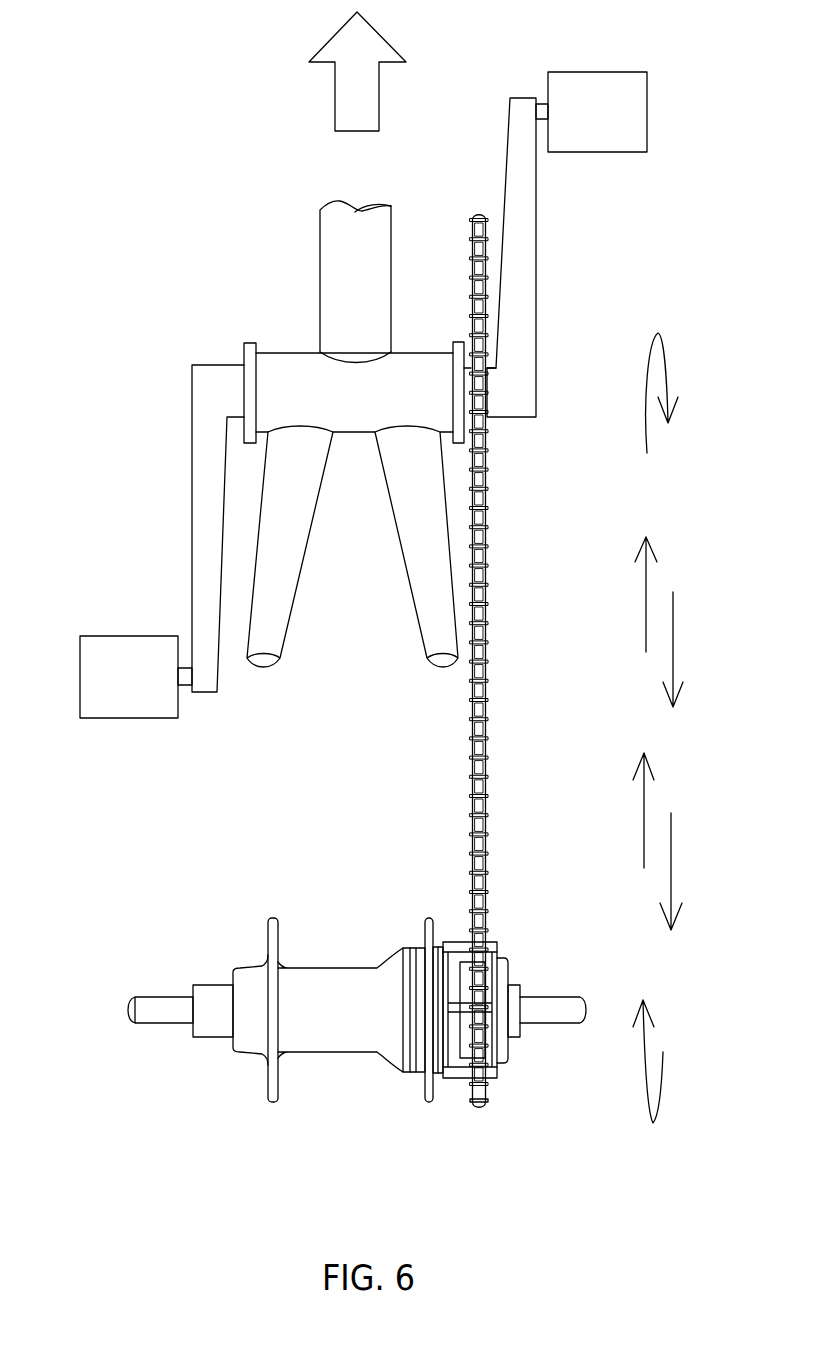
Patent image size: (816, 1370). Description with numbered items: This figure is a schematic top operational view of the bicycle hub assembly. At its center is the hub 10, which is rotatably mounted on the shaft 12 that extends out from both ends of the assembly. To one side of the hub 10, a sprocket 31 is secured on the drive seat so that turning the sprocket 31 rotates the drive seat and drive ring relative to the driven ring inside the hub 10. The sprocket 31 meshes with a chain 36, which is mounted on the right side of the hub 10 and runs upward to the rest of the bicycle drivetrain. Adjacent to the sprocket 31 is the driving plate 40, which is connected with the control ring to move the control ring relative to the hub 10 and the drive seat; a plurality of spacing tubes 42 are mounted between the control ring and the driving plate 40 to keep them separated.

The hub 10 is at (337, 1055).
The shaft 12 is at (142, 1015).
The sprocket 31 is at (473, 1110).
The chain 36 is at (470, 797).
The driving plate 40 is at (503, 1083).
The spacing tubes 42 is at (457, 1072).